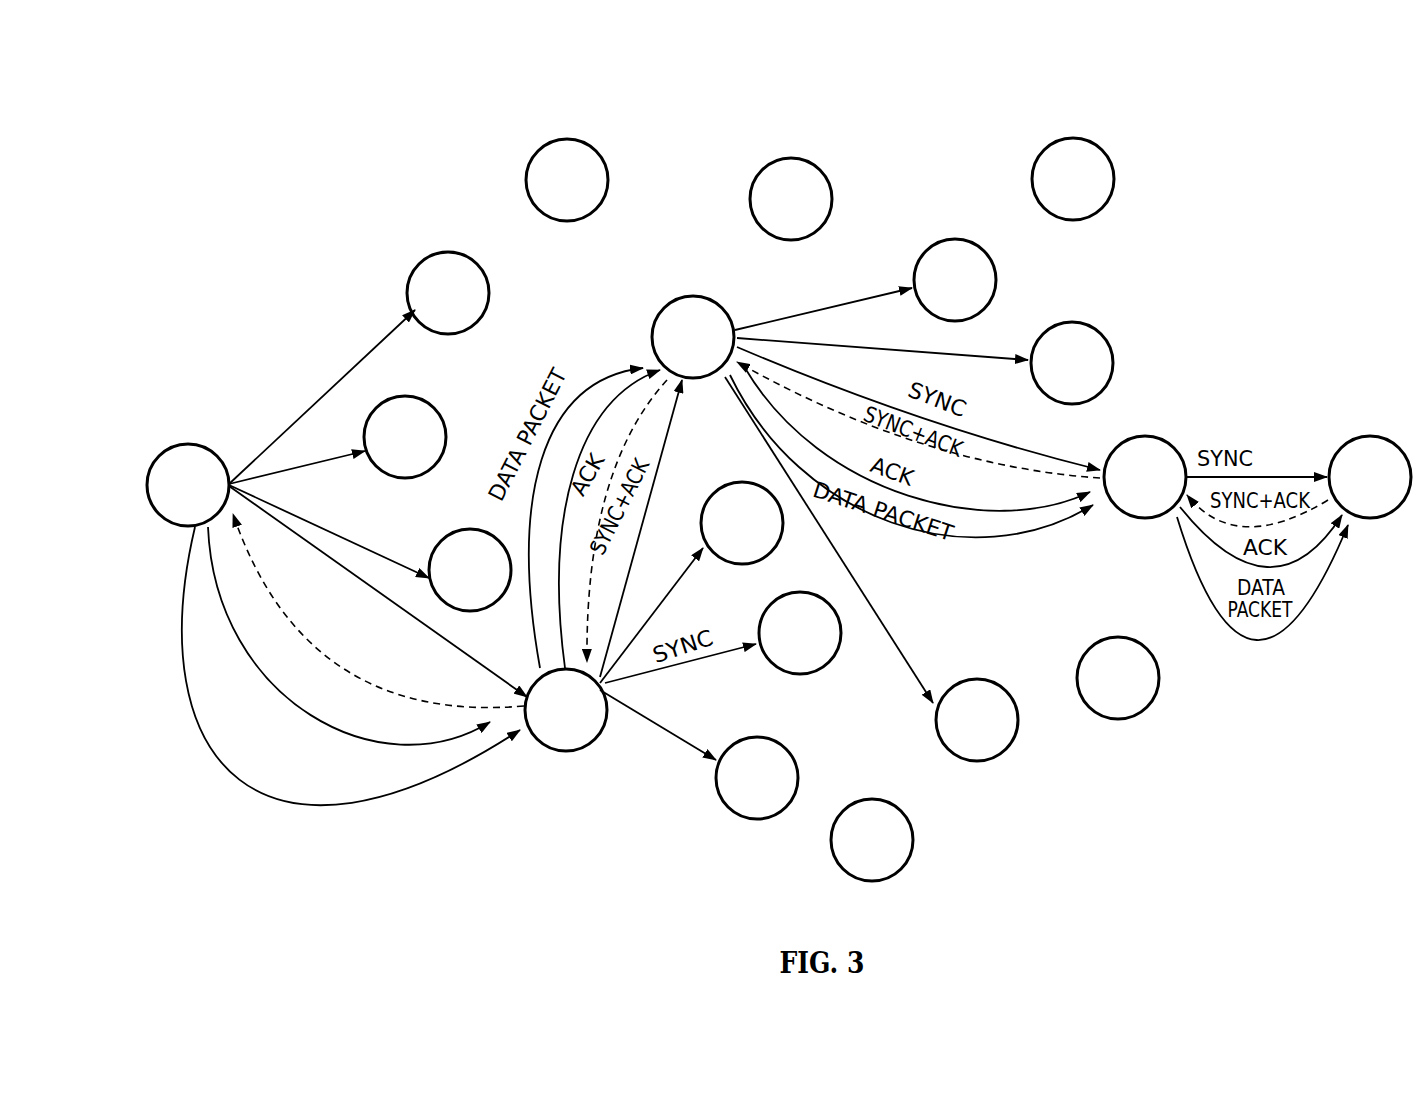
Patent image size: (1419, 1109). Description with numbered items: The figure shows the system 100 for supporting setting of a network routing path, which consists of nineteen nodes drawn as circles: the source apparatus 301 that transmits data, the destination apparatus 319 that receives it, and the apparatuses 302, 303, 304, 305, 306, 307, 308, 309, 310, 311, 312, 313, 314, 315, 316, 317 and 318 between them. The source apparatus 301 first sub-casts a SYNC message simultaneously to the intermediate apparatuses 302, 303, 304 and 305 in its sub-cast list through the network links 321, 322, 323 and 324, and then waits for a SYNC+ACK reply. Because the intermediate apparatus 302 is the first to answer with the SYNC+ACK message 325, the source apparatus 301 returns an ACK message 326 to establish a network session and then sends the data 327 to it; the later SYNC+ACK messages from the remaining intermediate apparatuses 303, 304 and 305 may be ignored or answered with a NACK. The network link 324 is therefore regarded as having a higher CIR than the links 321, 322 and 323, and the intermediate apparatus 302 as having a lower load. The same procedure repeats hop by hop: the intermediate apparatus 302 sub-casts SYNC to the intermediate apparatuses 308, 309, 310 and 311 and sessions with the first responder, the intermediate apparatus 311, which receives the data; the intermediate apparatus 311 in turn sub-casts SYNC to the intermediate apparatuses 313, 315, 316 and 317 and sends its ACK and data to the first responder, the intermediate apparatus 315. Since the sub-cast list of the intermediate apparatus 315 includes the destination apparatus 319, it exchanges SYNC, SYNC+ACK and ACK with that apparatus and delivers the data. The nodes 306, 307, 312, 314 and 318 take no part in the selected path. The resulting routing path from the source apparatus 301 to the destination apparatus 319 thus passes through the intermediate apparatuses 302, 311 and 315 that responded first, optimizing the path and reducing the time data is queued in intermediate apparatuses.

The system for supporting setting of a network routing path 100 is at (229, 102).
The source apparatus 301 is at (188, 485).
The intermediate apparatus 302 is at (566, 710).
The intermediate apparatus 303 is at (470, 570).
The intermediate apparatus 304 is at (405, 437).
The intermediate apparatus 305 is at (448, 293).
The node 306 is at (567, 180).
The node 307 is at (872, 840).
The intermediate apparatus 308 is at (757, 778).
The intermediate apparatus 309 is at (800, 633).
The intermediate apparatus 310 is at (742, 523).
The intermediate apparatus 311 is at (693, 337).
The node 312 is at (791, 199).
The intermediate apparatus 313 is at (977, 720).
The node 314 is at (1118, 678).
The intermediate apparatus 315 is at (1145, 477).
The intermediate apparatus 316 is at (1072, 363).
The intermediate apparatus 317 is at (955, 280).
The node 318 is at (1073, 179).
The destination apparatus 319 is at (1370, 477).
The network link 321 is at (322, 397).
The network link 322 is at (297, 471).
The network link 323 is at (329, 531).
The network link 324 is at (378, 591).
The SYNC+ACK message response 325 is at (378, 611).
The ACK message transmission 326 is at (349, 636).
The data transmission 327 is at (324, 666).